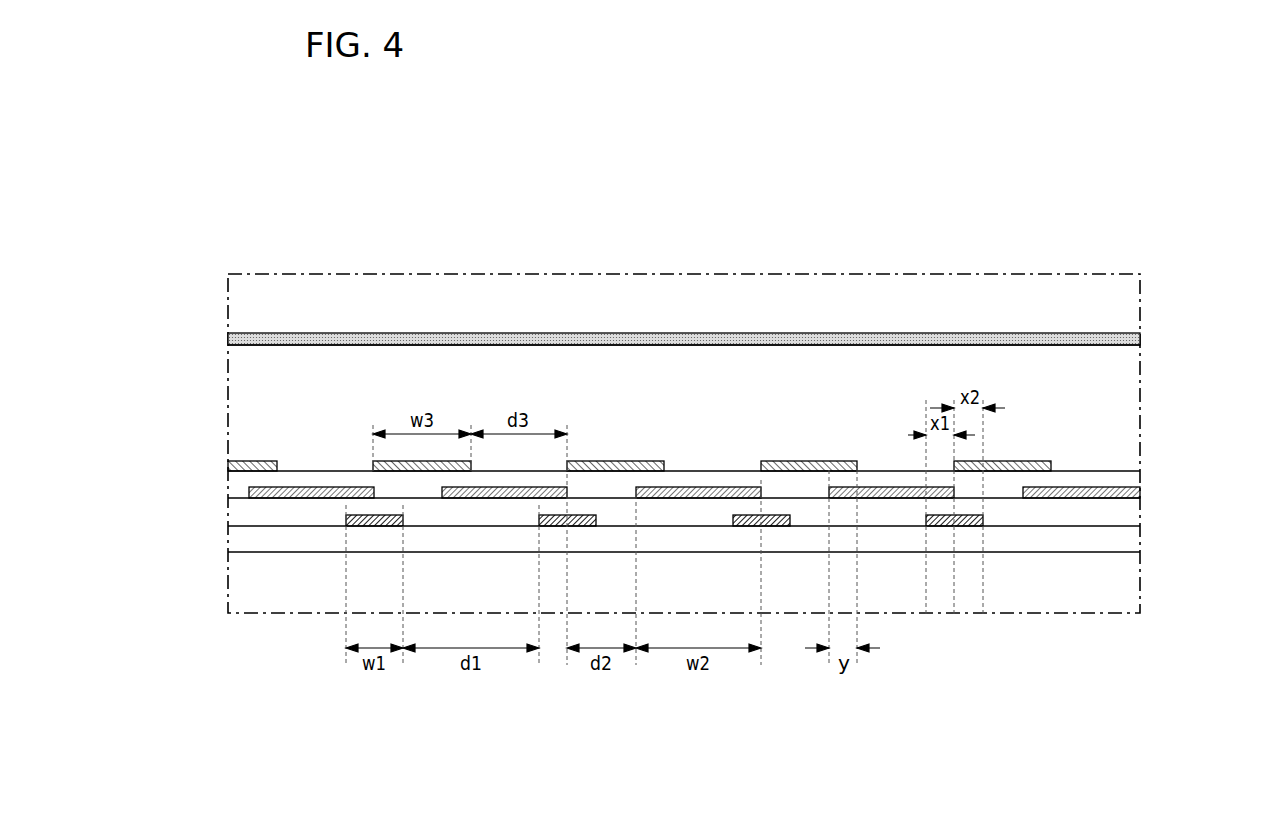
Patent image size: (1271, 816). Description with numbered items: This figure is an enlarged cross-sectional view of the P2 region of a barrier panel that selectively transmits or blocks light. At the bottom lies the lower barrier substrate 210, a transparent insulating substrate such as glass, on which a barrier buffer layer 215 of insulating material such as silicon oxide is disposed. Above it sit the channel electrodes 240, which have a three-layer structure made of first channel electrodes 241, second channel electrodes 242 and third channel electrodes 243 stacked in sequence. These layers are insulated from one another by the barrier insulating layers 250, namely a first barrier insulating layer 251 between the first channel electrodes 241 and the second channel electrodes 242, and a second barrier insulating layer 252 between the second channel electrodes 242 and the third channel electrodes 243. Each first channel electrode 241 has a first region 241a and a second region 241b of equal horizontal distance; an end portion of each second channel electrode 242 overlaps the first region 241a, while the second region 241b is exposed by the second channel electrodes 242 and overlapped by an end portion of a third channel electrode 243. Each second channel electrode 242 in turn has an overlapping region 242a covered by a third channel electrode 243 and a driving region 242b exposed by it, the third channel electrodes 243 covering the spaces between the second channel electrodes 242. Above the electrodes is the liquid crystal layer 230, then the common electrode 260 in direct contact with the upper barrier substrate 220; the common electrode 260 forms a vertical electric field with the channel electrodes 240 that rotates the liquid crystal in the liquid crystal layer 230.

The P2 region P2 is at (265, 273).
The lower barrier substrate 210 is at (1130, 581).
The barrier buffer layer 215 is at (1130, 539).
The upper barrier substrate 220 is at (1130, 313).
The liquid crystal layer 230 is at (1130, 406).
The channel electrodes 240 is at (631, 534).
The first channel electrodes 241 is at (591, 610).
The first region 241a is at (930, 527).
The second region 241b is at (970, 527).
The second channel electrodes 242 is at (654, 428).
The overlapping region 242a is at (840, 487).
The driving region 242b is at (886, 494).
The third channel electrodes 243 is at (228, 465).
The barrier insulating layers 250 is at (741, 495).
The first barrier insulating layer 251 is at (1130, 513).
The second barrier insulating layer 252 is at (1130, 479).
The common electrode 260 is at (1118, 340).